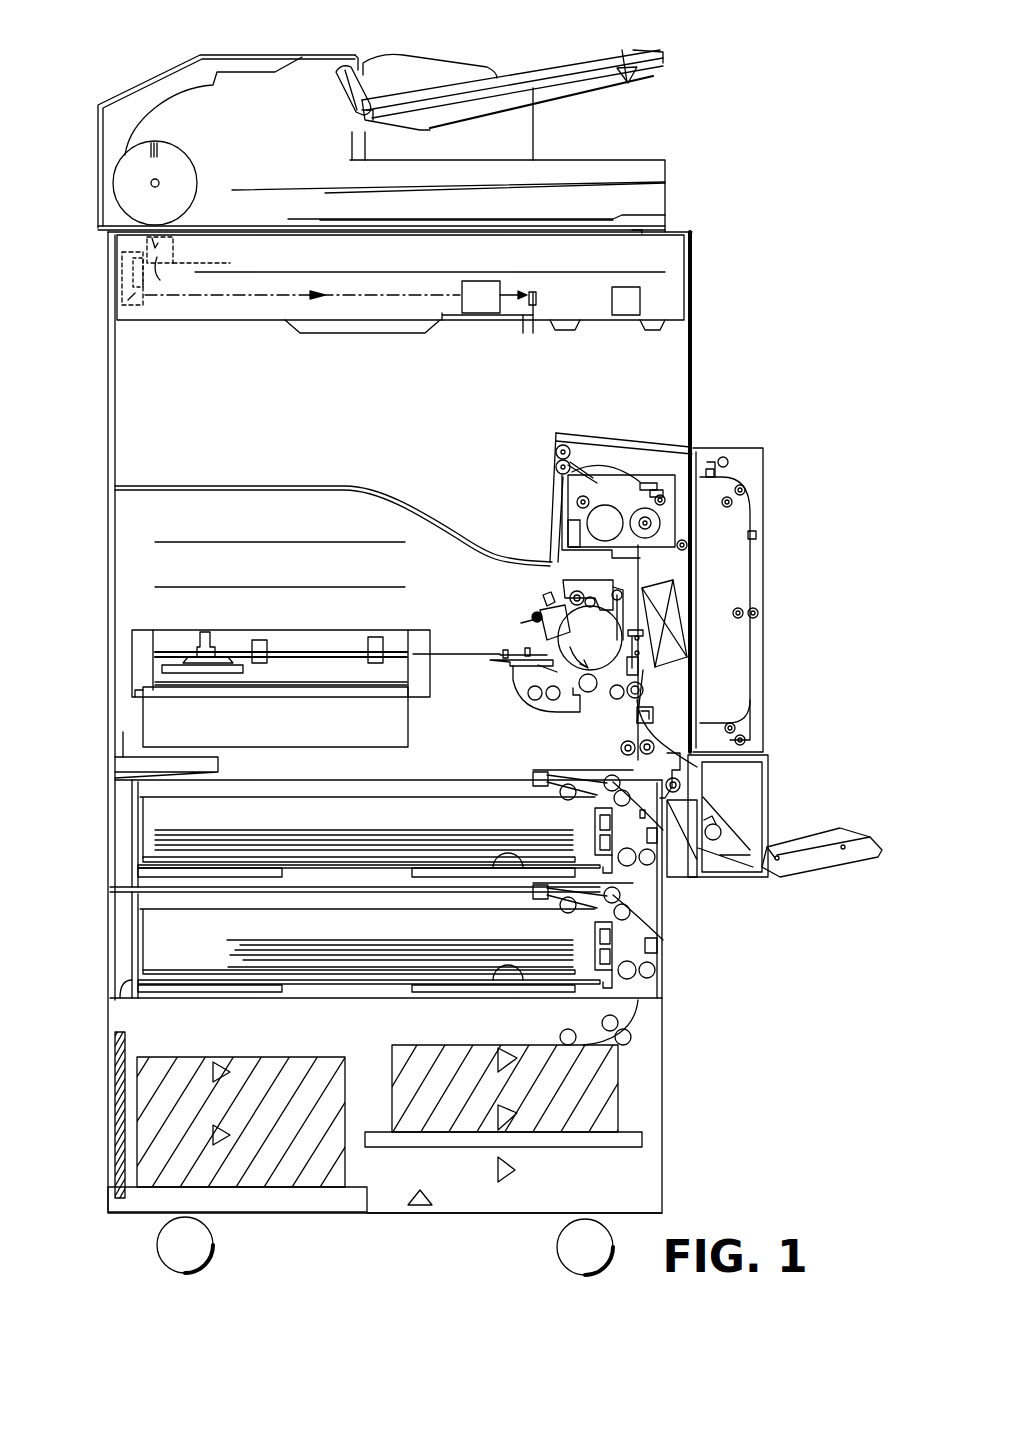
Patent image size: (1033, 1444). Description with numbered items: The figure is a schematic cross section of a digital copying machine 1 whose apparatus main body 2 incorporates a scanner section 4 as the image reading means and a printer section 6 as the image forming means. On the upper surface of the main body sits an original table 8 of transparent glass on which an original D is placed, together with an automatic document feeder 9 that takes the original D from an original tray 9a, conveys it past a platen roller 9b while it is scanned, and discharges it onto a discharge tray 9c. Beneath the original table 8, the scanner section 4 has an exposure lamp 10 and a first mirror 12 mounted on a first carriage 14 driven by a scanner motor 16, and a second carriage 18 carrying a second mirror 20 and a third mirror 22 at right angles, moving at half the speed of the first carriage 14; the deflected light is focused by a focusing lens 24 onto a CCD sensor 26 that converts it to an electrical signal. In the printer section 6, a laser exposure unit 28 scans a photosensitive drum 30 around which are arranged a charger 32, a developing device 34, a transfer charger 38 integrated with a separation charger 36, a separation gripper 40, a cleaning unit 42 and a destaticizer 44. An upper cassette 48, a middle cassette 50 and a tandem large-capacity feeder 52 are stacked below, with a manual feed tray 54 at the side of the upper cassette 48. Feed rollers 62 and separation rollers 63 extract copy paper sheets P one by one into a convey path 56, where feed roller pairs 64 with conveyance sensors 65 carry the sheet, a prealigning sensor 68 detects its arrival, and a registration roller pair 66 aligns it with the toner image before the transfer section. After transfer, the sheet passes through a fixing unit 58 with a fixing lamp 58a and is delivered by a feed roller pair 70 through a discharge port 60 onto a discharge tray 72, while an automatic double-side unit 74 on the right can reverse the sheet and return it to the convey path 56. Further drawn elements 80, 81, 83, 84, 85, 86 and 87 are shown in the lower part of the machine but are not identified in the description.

The digital copying machine 1 is at (755, 233).
The apparatus main body 2 is at (693, 355).
The scanner section 4 is at (675, 293).
The printer section 6 is at (778, 777).
The original table 8 is at (612, 231).
The automatic document feeder 9 is at (200, 116).
The original tray 9a is at (627, 60).
The platen roller 9b is at (123, 187).
The discharge tray 9c is at (600, 160).
The exposure lamp 10 is at (166, 247).
The first mirror 12 is at (191, 280).
The first carriage 14 is at (230, 258).
The scanner motor 16 is at (625, 312).
The second carriage 18 is at (123, 290).
The second mirror 20 is at (130, 260).
The third mirror 22 is at (135, 293).
The focusing lens 24 is at (482, 300).
The CCD sensor 26 is at (538, 295).
The laser exposure unit 28 is at (220, 640).
The photosensitive drum 30 is at (595, 612).
The charger 32 is at (545, 630).
The developing device 34 is at (545, 708).
The separation charger 36 is at (642, 668).
The transfer charger 38 is at (670, 648).
The separation gripper 40 is at (660, 598).
The cleaning unit 42 is at (570, 590).
The destaticizer 44 is at (543, 603).
The upper cassette 48 is at (132, 828).
The middle cassette 50 is at (132, 940).
The tandem large-capacity feeder 52 is at (115, 1101).
The manual feed tray 54 is at (822, 862).
The convey path 56 is at (620, 755).
The fixing unit 58 is at (603, 497).
The fixing lamp 58a is at (658, 497).
The discharge port 60 is at (555, 468).
The feed rollers 62 is at (562, 798).
The separation rollers 63 is at (637, 858).
The feed roller pairs 64 is at (618, 745).
The conveyance sensor 65 is at (662, 948).
The registration roller pair 66 is at (612, 698).
The prealigning sensor 68 is at (660, 715).
The feed roller pair 70 is at (556, 450).
The discharge tray 72 is at (362, 486).
The automatic double-side unit 74 is at (780, 447).
The bottom plate 80 is at (475, 1203).
The base 81 is at (325, 1207).
The lift plate 83 is at (640, 1142).
The lift arrow 84 is at (508, 1173).
The lift arrow 85 is at (510, 1113).
The lift arrow 86 is at (508, 1045).
The lift arrow 87 is at (420, 1207).
The original D is at (535, 67).
The copy paper sheet P is at (355, 838).